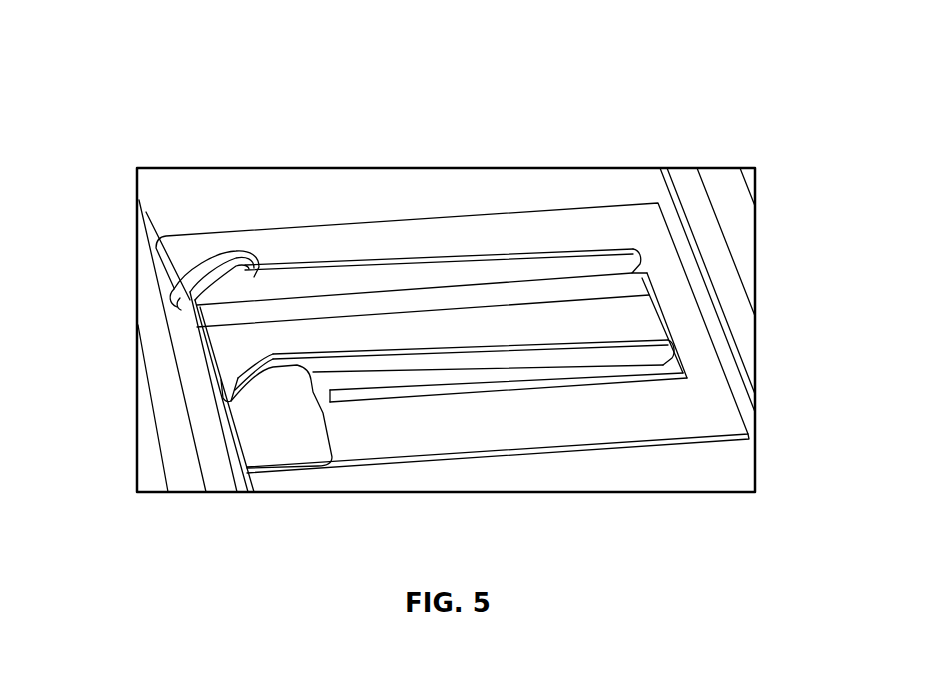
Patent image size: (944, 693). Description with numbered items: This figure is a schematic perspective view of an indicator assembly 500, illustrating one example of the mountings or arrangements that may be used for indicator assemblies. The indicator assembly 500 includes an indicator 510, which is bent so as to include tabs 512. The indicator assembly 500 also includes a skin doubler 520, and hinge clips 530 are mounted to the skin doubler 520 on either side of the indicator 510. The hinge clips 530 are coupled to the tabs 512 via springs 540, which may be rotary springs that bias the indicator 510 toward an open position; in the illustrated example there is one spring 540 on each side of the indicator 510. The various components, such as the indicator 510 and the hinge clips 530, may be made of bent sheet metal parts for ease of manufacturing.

The indicator assembly 500 is at (651, 110).
The indicator 510 is at (625, 320).
The tabs 512 is at (415, 270).
The skin doubler 520 is at (582, 430).
The hinge clips 530 is at (251, 252).
The springs 540 is at (177, 285).